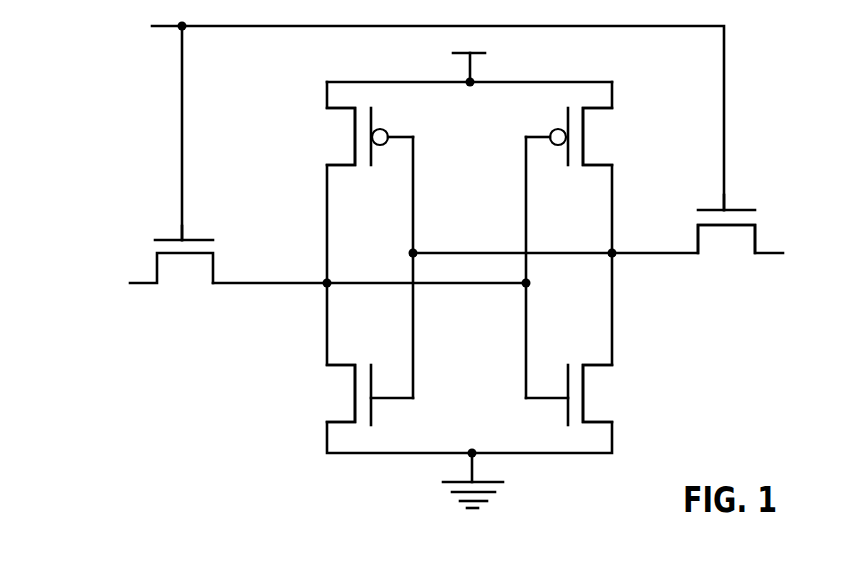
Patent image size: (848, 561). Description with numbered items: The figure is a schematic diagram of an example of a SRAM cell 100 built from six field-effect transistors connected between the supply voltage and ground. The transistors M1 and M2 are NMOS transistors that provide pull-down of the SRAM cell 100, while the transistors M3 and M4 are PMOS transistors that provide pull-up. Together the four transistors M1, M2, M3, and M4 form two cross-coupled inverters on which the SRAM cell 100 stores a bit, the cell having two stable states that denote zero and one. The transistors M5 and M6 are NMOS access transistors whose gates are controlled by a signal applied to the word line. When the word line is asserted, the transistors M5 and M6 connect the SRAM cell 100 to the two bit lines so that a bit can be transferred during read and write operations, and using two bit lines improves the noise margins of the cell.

The SRAM cell 100 is at (110, 112).
The transistor M1 is at (370, 375).
The transistor M2 is at (569, 375).
The transistor M3 is at (378, 136).
The transistor M4 is at (554, 136).
The transistor M5 is at (183, 242).
The transistor M6 is at (713, 213).